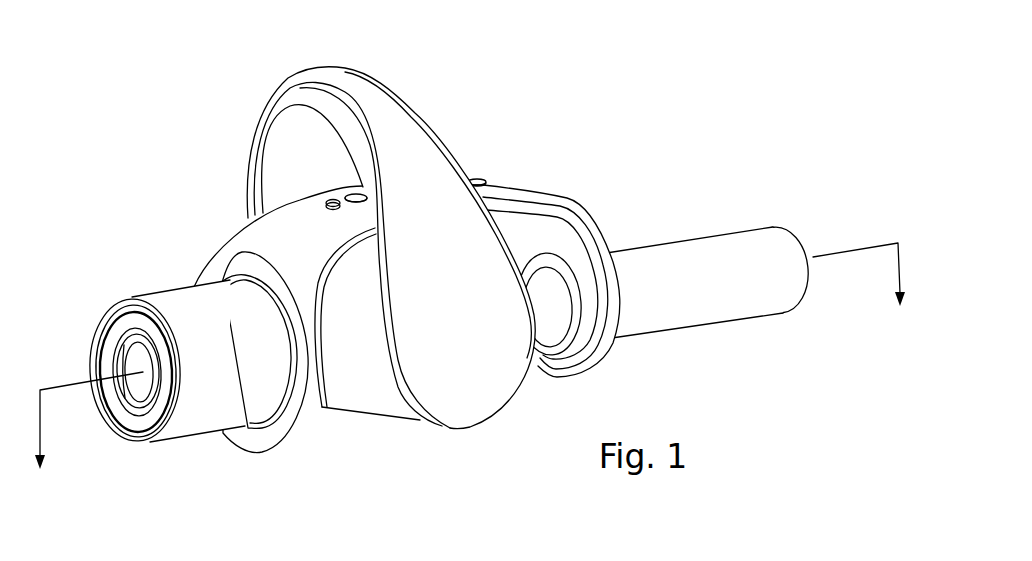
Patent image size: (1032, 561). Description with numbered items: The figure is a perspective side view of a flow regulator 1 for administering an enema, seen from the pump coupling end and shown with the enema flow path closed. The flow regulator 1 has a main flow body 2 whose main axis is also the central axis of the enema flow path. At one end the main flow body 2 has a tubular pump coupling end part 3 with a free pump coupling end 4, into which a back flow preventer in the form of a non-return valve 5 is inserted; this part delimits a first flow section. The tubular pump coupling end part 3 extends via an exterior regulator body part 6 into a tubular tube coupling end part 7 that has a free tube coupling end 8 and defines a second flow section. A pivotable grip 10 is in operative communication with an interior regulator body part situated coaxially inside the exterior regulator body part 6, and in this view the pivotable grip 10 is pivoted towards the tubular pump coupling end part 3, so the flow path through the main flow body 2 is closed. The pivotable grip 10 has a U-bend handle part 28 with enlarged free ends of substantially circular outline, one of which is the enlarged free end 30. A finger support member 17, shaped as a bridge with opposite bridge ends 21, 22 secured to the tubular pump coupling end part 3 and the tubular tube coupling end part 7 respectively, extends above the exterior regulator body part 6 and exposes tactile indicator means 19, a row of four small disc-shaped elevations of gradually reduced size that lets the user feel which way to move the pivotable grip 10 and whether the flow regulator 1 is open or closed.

The flow regulator 1 is at (155, 250).
The main flow body 2 is at (540, 268).
The tubular pump coupling end part 3 is at (207, 400).
The free pump coupling end 4 is at (115, 296).
The non-return valve 5 is at (126, 402).
The exterior regulator body part 6 is at (350, 370).
The tubular tube coupling end part 7 is at (760, 252).
The free tube coupling end 8 is at (803, 248).
The pivotable grip 10 is at (388, 142).
The finger support member 17 is at (267, 241).
The tactile indicator means 19 is at (480, 180).
The bridge end 21 is at (610, 347).
The bridge end 22 is at (253, 443).
The U-bend handle part 28 is at (343, 98).
The enlarged free end 30 is at (468, 370).